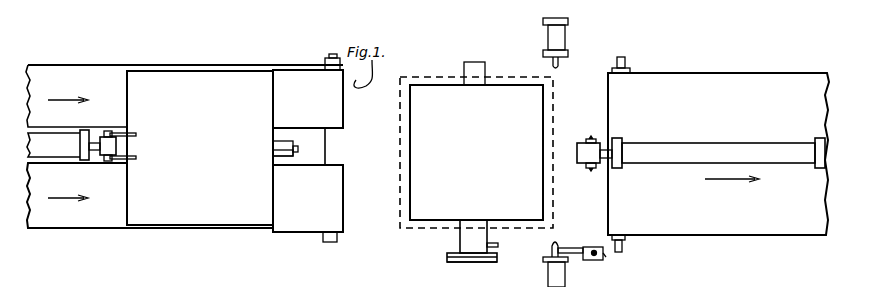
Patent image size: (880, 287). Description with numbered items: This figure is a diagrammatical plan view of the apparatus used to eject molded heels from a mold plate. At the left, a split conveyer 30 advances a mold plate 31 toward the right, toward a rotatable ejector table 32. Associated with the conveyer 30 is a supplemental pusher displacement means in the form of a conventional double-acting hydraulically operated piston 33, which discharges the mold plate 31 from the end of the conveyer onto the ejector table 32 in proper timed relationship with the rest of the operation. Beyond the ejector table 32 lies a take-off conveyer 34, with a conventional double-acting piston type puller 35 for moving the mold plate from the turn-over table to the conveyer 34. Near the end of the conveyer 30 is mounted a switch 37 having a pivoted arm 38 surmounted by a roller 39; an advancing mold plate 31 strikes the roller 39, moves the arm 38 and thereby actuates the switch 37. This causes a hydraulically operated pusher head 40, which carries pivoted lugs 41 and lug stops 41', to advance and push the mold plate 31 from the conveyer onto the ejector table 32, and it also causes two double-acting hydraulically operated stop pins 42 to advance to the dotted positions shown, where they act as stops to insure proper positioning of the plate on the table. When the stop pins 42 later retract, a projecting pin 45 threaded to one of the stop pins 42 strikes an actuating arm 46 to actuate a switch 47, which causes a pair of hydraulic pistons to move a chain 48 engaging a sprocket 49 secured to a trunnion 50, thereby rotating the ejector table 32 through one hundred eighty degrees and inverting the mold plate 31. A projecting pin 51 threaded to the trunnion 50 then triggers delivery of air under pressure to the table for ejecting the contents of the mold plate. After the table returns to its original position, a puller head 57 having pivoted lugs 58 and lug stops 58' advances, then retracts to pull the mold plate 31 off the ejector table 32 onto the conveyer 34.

The split conveyer 30 is at (110, 60).
The mold plate 31 is at (243, 80).
The rotatable ejector table 32 is at (500, 92).
The double-acting hydraulically operated piston 33 is at (57, 136).
The take-off conveyer 34 is at (744, 88).
The puller 35 is at (756, 143).
The switch 37 is at (283, 140).
The pivoted arm 38 is at (286, 157).
The roller 39 is at (298, 149).
The pusher head 40 is at (100, 152).
The pivoted lugs 41 is at (144, 140).
The lug stops 41' is at (103, 150).
The stop pins 42 is at (558, 80).
The projecting pin 45 is at (565, 248).
The actuating arm 46 is at (585, 260).
The switch 47 is at (604, 259).
The chain 48 is at (455, 262).
The sprocket 49 is at (472, 263).
The trunnion 50 is at (460, 246).
The projecting pin 51 is at (493, 242).
The puller head 57 is at (577, 154).
The pivoted lugs 58 is at (611, 160).
The lug stops 58' is at (573, 145).